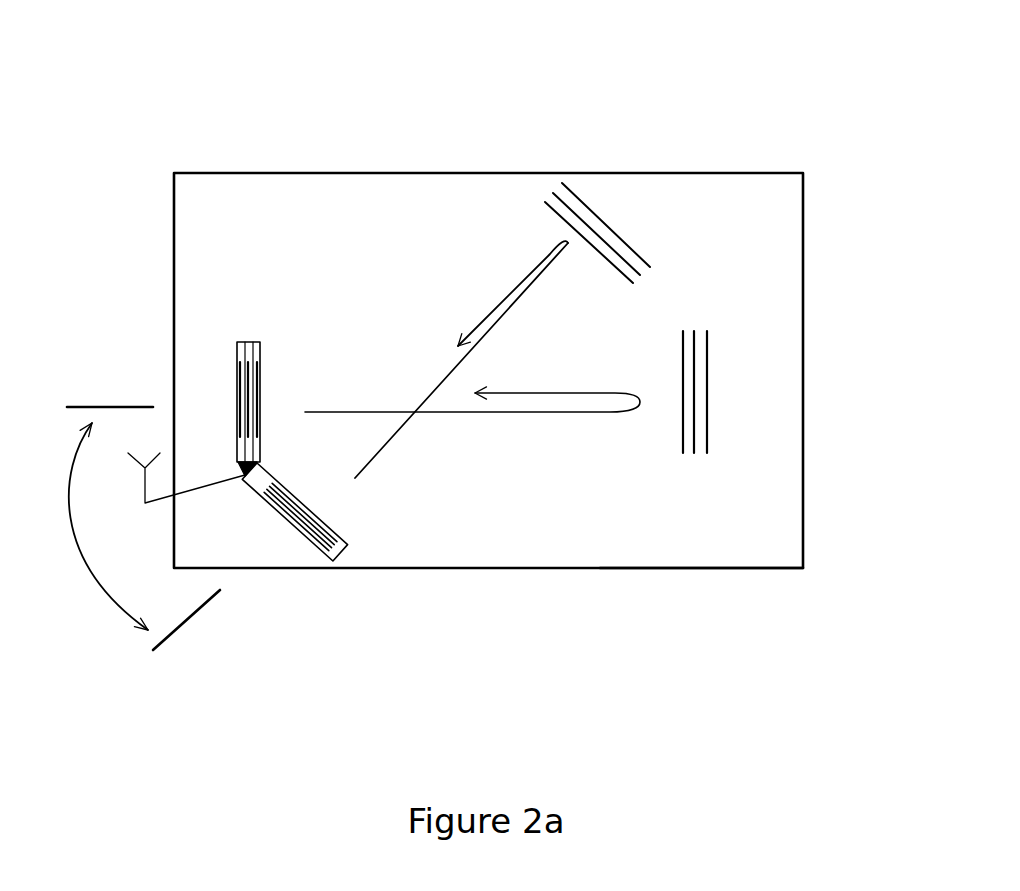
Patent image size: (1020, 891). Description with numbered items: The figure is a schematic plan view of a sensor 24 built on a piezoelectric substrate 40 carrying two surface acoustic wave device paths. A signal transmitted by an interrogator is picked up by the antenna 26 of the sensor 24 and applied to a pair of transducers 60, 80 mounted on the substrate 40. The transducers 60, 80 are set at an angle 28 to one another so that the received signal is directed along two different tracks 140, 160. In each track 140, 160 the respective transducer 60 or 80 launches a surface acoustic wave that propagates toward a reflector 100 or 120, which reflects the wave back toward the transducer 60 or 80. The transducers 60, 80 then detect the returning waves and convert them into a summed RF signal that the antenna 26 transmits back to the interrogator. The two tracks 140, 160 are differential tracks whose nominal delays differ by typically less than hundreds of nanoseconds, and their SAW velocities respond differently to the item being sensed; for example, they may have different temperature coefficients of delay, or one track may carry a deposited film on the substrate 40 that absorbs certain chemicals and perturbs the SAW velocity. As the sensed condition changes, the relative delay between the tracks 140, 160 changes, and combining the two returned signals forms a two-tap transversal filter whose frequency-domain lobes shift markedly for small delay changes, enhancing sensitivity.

The sensor 24 is at (772, 155).
The antenna 26 is at (140, 492).
The angle θ 28 is at (55, 600).
The substrate 40 is at (733, 572).
The transducer 60 is at (223, 397).
The transducer 80 is at (283, 528).
The reflector 100 is at (720, 418).
The reflector 120 is at (612, 213).
The track 140 is at (517, 425).
The track 160 is at (466, 308).